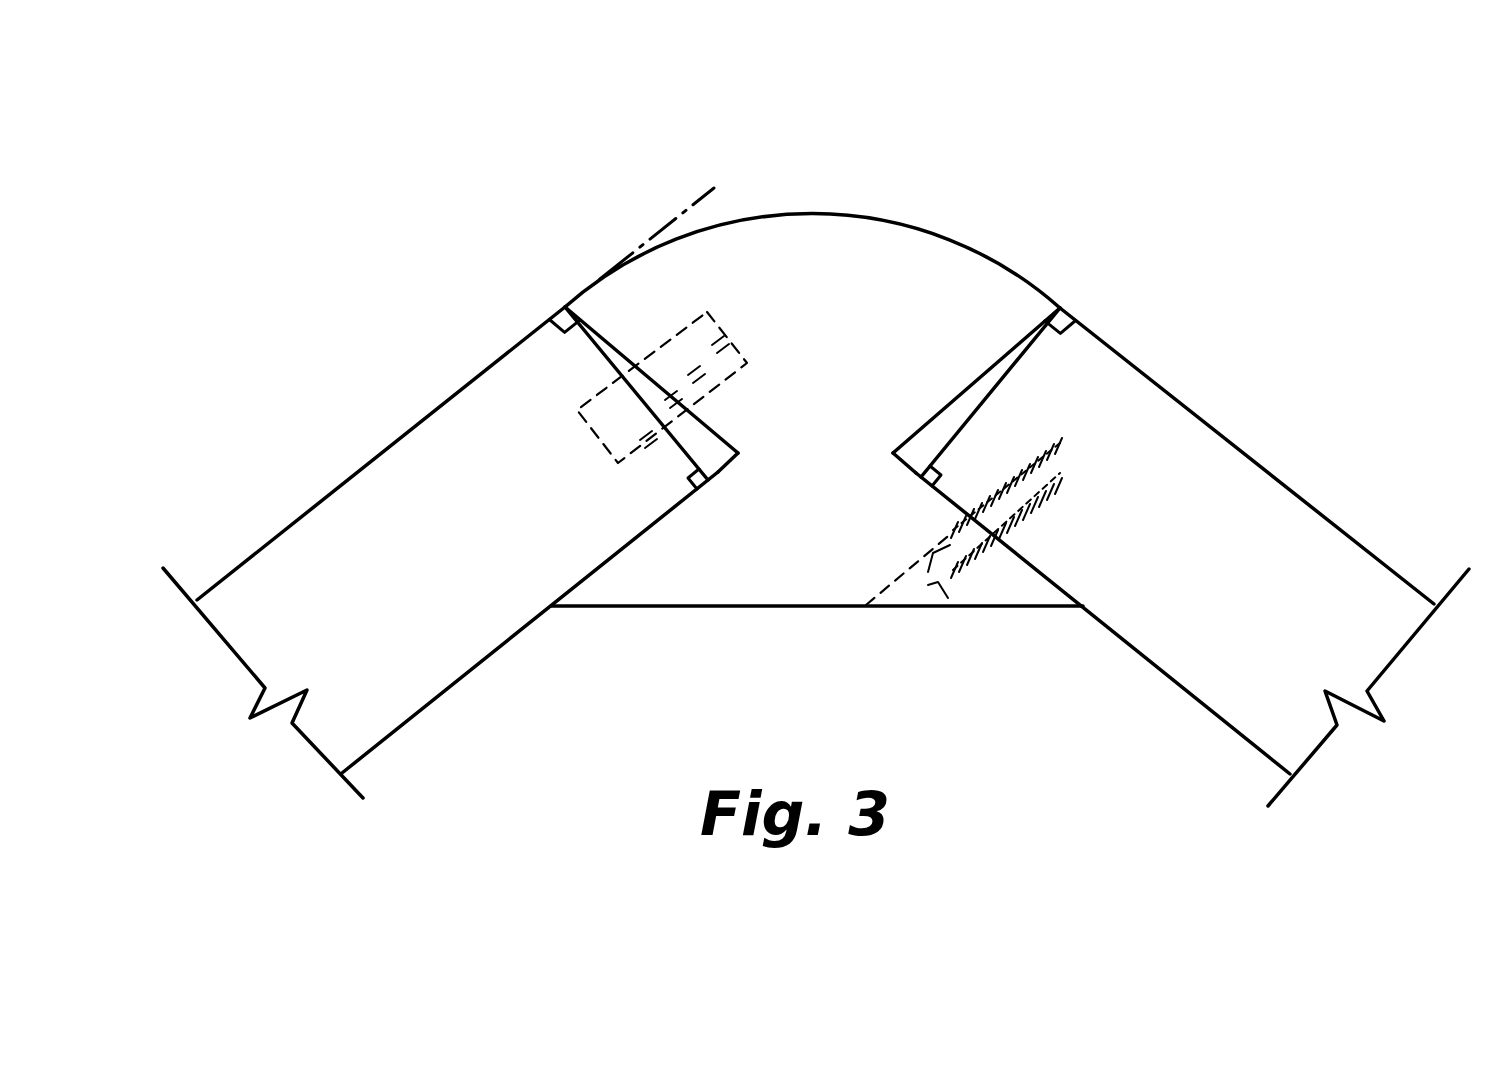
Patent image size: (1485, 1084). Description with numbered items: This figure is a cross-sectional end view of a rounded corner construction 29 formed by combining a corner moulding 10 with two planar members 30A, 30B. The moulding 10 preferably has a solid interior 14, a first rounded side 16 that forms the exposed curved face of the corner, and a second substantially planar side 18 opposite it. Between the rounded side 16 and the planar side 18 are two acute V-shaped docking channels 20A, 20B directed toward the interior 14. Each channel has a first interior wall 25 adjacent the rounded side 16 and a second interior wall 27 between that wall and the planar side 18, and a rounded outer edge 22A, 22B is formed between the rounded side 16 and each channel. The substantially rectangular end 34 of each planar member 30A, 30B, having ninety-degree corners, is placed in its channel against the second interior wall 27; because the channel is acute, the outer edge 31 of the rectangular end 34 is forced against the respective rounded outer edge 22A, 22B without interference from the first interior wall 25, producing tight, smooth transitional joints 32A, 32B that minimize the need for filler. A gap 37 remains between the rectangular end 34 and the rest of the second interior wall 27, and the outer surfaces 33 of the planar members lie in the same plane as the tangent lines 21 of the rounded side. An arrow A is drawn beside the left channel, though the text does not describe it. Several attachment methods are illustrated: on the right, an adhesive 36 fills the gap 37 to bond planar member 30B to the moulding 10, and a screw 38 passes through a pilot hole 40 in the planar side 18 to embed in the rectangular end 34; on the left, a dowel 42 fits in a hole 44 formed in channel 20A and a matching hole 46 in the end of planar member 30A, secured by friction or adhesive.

The corner moulding 10 is at (785, 208).
The solid interior 14 is at (812, 395).
The first rounded side 16 is at (927, 227).
The second substantially planar side 18 is at (665, 608).
The V-shaped docking channel 20A is at (718, 474).
The V-shaped docking channel 20B is at (912, 458).
The tangent line 21 is at (640, 247).
The rounded outer edge 22A is at (565, 304).
The rounded outer edge 22B is at (1060, 304).
The first interior wall 25 is at (612, 351).
The second interior wall 27 is at (627, 547).
The corner construction 29 is at (897, 138).
The planar member 30A is at (383, 449).
The planar member 30B is at (1240, 449).
The outer edge 31 is at (557, 313).
The joint 32A is at (548, 308).
The joint 32B is at (1078, 290).
The outer surface 33 is at (290, 524).
The substantially rectangular end 34 is at (685, 448).
The adhesive 36 is at (987, 382).
The gap 37 is at (713, 453).
The screw 38 is at (938, 580).
The pilot hole 40 is at (878, 583).
The dowel 42 is at (617, 427).
The hole 44 is at (728, 338).
The hole 46 is at (577, 410).
The direction arrow A is at (568, 573).